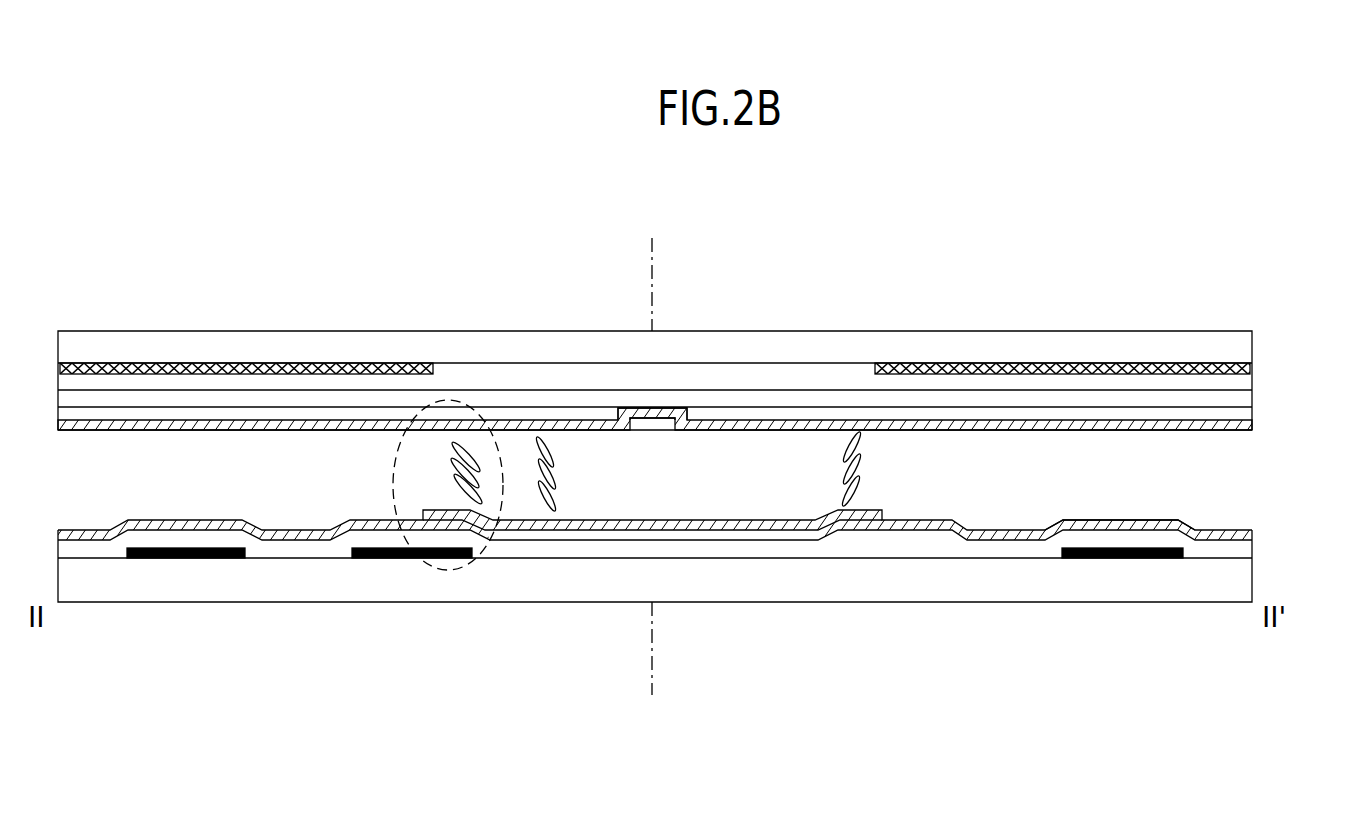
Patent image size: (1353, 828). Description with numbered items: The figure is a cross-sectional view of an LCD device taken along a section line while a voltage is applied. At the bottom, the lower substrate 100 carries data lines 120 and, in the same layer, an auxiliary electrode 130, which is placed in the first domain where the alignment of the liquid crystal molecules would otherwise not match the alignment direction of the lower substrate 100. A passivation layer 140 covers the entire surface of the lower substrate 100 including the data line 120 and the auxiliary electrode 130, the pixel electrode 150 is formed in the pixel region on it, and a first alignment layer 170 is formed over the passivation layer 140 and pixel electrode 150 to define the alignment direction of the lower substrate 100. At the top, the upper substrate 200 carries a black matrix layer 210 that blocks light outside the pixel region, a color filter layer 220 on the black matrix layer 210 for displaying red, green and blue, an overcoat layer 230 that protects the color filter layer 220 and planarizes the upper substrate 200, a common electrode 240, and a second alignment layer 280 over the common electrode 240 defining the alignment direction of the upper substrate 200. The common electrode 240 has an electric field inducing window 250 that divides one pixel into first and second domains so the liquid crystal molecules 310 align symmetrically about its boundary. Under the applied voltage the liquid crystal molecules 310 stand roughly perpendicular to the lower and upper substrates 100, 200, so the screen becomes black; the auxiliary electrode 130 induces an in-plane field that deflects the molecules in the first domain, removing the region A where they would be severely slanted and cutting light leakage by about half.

The lower substrate 100 is at (1246, 578).
The data line 120 is at (191, 558).
The auxiliary electrode 130 is at (382, 558).
The passivation layer 140 is at (1246, 541).
The pixel electrode 150 is at (588, 532).
The first alignment layer 170 is at (1098, 520).
The upper substrate 200 is at (1093, 343).
The black matrix layer 210 is at (1197, 365).
The color filter layer 220 is at (1243, 383).
The overcoat layer 230 is at (1243, 399).
The common electrode 240 is at (1243, 417).
The electric field inducing window 250 is at (647, 421).
The second alignment layer 280 is at (1226, 431).
The liquid crystal molecules 310 is at (850, 494).
The region A is at (396, 480).